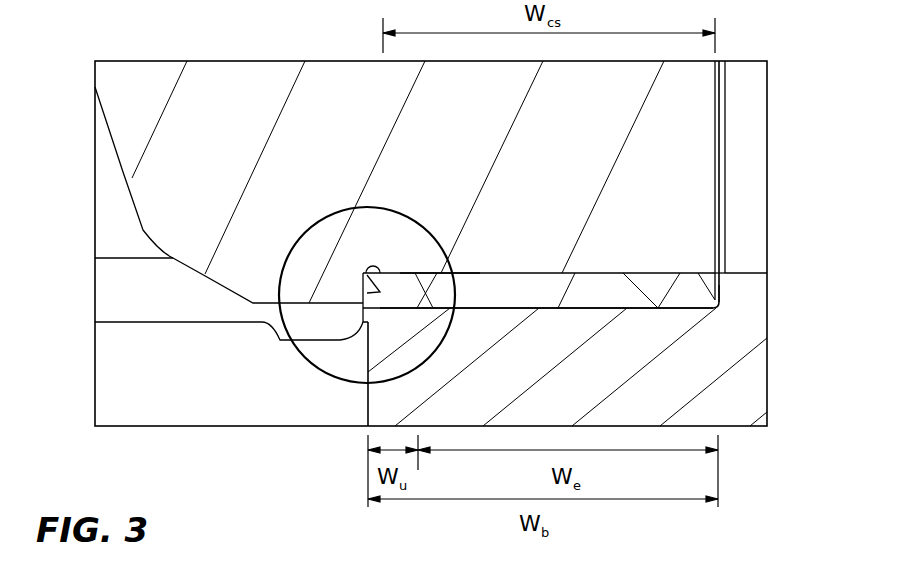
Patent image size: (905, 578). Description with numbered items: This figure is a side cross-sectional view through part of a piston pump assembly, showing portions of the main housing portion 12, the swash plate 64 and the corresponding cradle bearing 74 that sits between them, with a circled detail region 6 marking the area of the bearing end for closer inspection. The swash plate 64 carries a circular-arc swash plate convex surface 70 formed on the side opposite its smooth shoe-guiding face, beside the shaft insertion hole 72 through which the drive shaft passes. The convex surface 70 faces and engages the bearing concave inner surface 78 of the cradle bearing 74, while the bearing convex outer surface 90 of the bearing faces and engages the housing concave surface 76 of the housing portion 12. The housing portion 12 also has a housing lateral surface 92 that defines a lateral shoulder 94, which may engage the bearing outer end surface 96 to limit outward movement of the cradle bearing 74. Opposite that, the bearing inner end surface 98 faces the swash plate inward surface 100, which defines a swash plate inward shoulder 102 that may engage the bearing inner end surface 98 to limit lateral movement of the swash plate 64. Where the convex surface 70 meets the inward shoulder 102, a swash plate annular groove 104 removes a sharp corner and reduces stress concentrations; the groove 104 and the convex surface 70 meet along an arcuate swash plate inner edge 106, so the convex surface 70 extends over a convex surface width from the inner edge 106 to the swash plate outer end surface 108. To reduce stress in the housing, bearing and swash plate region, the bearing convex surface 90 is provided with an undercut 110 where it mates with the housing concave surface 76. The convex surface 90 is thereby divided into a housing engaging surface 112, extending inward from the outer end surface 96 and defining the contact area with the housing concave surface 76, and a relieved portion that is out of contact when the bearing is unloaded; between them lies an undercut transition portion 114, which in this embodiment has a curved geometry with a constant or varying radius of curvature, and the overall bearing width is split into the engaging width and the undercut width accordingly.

The main housing portion 12 is at (700, 420).
The swash plate 64 is at (138, 100).
The shaft insertion hole 72 is at (123, 172).
The housing concave surface 76 is at (602, 330).
The cradle bearing 74 is at (693, 300).
The bearing inner end surface 98 is at (362, 303).
The swash plate inward surface 100 is at (366, 290).
The swash plate inward shoulder 102 is at (363, 272).
The swash plate annular groove 104 is at (443, 270).
The swash plate inner edge 106 is at (396, 273).
The undercut transition portion 114 is at (437, 266).
The undercut 110 is at (390, 306).
The swash plate outer end surface 108 is at (716, 122).
The swash plate convex surface 70 is at (592, 273).
The bearing concave inner surface 78 is at (705, 272).
The housing lateral surface 92 is at (722, 272).
The lateral shoulder 94 is at (727, 277).
The bearing outer end surface 96 is at (722, 292).
The bearing convex outer surface 90 is at (669, 307).
The housing engaging surface 112 is at (679, 354).
The detail view circle 6 is at (333, 376).